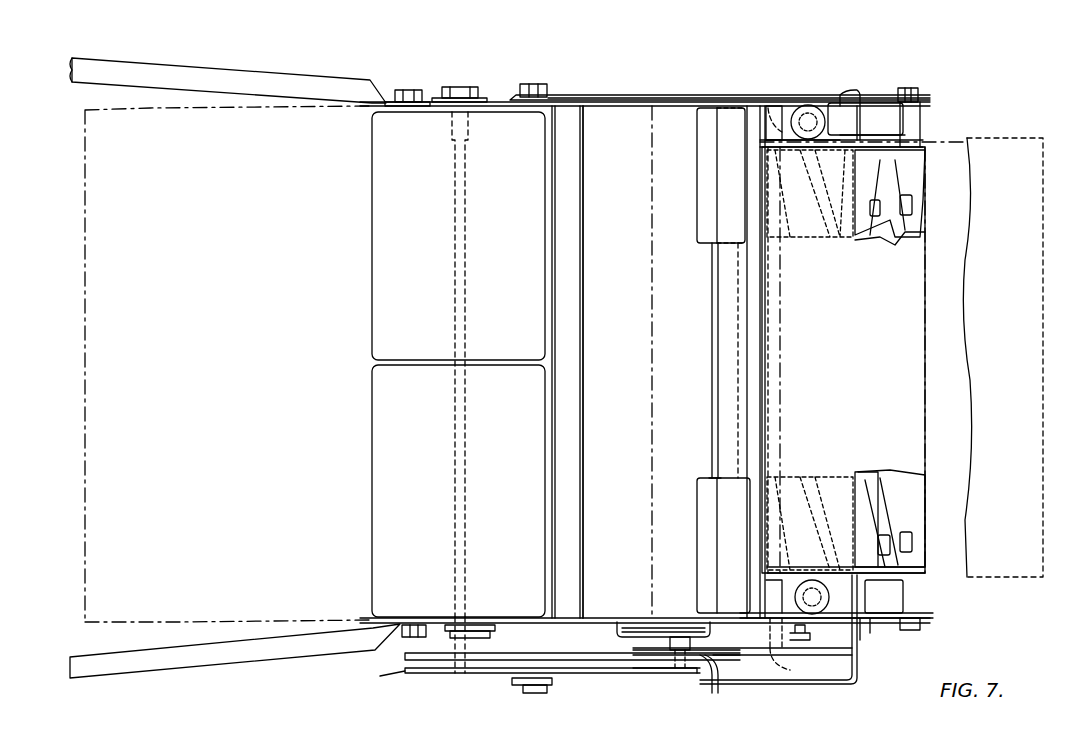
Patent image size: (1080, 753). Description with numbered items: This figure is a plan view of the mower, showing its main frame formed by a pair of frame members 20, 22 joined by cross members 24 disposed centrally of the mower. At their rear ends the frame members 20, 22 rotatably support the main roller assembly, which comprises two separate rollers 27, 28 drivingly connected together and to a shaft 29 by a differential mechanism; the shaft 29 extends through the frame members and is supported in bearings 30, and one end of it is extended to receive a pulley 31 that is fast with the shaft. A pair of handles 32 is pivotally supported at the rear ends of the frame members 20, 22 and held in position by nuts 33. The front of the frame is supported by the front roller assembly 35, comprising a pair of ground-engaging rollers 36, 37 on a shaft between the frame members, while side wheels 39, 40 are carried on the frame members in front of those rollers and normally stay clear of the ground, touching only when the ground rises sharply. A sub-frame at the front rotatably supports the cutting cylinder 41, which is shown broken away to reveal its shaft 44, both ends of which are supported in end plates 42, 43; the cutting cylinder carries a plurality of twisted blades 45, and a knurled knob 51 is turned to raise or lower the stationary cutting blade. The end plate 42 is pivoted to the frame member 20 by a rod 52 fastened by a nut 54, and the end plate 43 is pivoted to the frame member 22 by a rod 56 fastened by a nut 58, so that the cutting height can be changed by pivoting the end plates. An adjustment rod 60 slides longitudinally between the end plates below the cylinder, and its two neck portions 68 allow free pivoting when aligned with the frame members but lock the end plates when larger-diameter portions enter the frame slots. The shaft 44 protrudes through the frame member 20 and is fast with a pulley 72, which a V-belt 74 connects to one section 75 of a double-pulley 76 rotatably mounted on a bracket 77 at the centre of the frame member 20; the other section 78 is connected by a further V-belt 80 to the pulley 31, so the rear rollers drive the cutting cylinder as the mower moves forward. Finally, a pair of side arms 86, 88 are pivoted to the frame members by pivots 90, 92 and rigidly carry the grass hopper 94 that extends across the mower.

The frame member 20 is at (634, 618).
The frame member 22 is at (648, 97).
The cross members 24 is at (628, 347).
The roller 27 is at (392, 438).
The roller 28 is at (386, 278).
The shaft 29 is at (462, 650).
The bearings 30 is at (465, 95).
The pulley 31 is at (405, 671).
The handles 32 is at (250, 84).
The nuts 33 is at (408, 105).
The front roller assembly 35 is at (708, 350).
The roller 36 is at (700, 196).
The roller 37 is at (700, 512).
The side wheel 39 is at (895, 620).
The side wheel 40 is at (892, 112).
The cutting cylinder 41 is at (920, 266).
The end plate 42 is at (925, 573).
The end plate 43 is at (918, 146).
The shaft 44 is at (862, 520).
The twisted blades 45 is at (878, 480).
The knurled knob 51 is at (812, 105).
The rod 52 is at (910, 590).
The nut 54 is at (922, 627).
The rod 56 is at (912, 116).
The nut 58 is at (910, 88).
The adjustment rod 60 is at (770, 105).
The neck portions 68 is at (786, 105).
The pulley 72 is at (843, 655).
The V-belt 74 is at (757, 650).
The section of double-pulley 75 is at (706, 675).
The double-pulley 76 is at (626, 651).
The bracket 77 is at (618, 622).
The section of double-pulley 78 is at (684, 622).
The V-belt 80 is at (600, 660).
The side arm 86 is at (652, 673).
The side arm 88 is at (596, 95).
The pivot 90 is at (515, 690).
The pivot 92 is at (535, 92).
The grass hopper 94 is at (1014, 344).